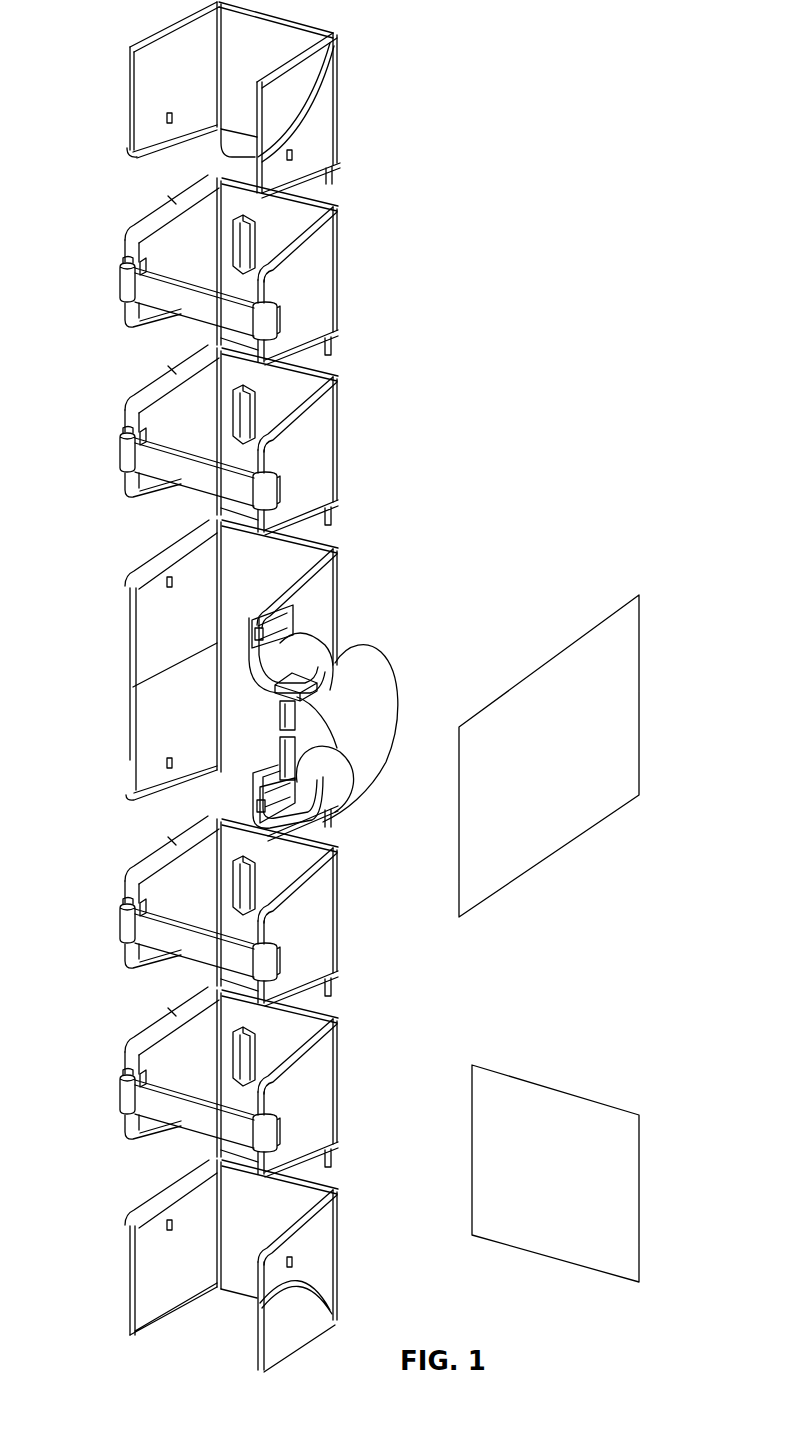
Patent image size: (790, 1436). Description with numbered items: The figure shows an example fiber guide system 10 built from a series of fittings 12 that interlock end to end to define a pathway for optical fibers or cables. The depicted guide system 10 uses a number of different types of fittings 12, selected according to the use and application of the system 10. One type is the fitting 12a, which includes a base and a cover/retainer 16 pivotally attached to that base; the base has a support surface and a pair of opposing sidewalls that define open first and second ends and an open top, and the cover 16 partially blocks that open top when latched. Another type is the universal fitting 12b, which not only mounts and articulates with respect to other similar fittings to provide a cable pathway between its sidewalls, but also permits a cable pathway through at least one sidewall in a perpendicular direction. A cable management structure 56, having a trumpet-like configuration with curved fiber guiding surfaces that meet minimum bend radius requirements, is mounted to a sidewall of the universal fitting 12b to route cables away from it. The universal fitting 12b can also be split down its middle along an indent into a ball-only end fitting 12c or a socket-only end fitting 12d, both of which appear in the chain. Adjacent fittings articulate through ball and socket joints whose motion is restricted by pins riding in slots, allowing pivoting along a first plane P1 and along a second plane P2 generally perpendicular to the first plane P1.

The fiber guide system 10 is at (392, 446).
The fittings 12 is at (128, 152).
The fitting 12a is at (335, 930).
The universal fitting 12b is at (323, 605).
The ball-only end fitting 12c is at (335, 113).
The socket-only end fitting 12d is at (325, 1240).
The cover/retainer 16 is at (163, 1110).
The cable management structure 56 is at (380, 692).
The first plane P1 is at (631, 724).
The second plane P2 is at (595, 1118).